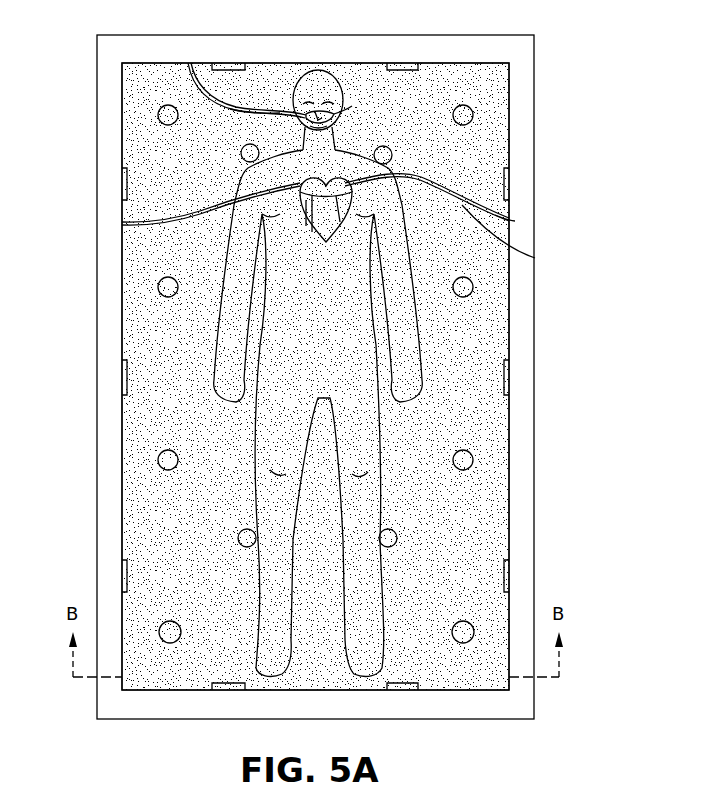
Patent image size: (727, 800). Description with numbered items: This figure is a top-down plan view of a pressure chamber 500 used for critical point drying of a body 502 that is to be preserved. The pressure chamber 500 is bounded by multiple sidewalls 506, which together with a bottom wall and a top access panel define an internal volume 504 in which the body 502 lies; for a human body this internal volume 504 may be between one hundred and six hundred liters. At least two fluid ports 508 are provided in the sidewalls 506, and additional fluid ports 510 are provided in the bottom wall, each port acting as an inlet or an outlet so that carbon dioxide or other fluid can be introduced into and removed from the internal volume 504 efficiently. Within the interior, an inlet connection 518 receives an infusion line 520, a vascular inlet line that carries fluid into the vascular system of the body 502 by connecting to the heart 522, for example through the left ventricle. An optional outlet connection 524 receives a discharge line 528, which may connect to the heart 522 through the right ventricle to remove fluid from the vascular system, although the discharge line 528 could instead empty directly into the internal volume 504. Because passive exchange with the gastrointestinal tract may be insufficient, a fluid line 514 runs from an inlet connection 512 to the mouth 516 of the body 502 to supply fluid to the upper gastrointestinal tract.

The pressure chamber 500 is at (530, 57).
The body 502 is at (280, 428).
The internal volume 504 is at (328, 650).
The sidewalls 506 is at (318, 63).
The fluid ports 508 is at (402, 63).
The fluid ports 510 is at (165, 114).
The inlet connection 512 is at (188, 63).
The fluid line 514 is at (248, 108).
The mouth 516 is at (338, 114).
The inlet connection 518 is at (122, 224).
The infusion line 520 is at (190, 214).
The heart 522 is at (338, 236).
The outlet connection 524 is at (515, 221).
The discharge line 528 is at (535, 258).